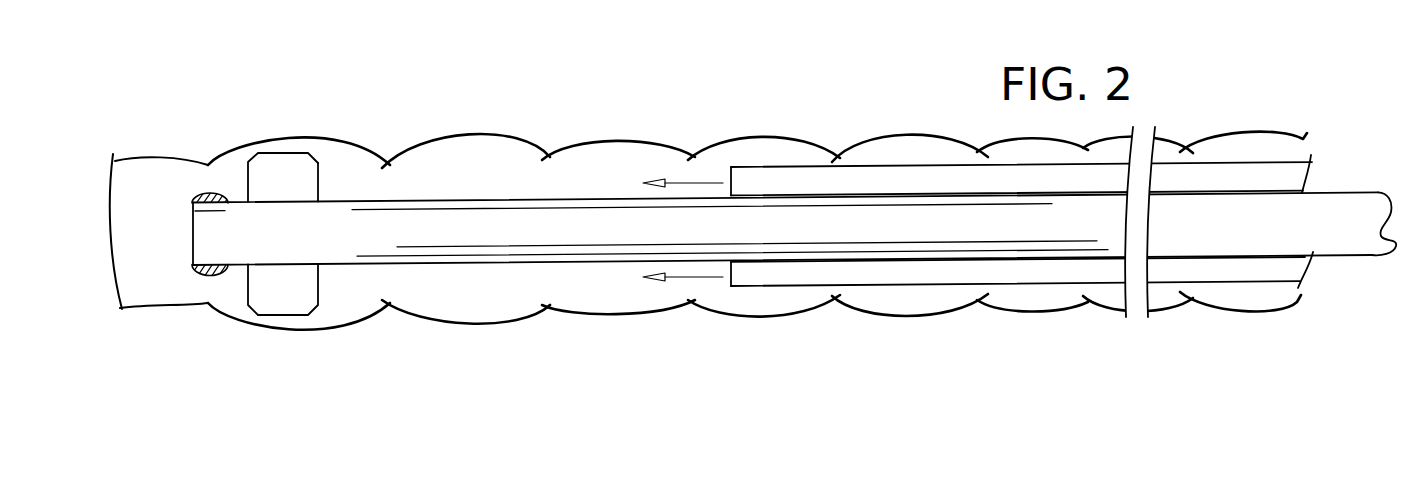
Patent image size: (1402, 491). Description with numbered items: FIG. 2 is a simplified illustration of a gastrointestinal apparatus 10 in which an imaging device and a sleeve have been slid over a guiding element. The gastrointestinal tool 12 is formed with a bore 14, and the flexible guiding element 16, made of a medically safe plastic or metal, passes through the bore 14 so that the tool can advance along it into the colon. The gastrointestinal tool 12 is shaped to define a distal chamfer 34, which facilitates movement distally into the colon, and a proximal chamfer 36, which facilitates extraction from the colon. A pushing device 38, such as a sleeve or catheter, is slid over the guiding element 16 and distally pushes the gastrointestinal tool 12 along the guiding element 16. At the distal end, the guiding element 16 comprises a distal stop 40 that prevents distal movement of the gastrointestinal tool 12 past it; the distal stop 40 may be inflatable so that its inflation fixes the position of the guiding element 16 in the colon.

The gastrointestinal apparatus 10 is at (753, 214).
The gastrointestinal tool 12 is at (284, 168).
The bore 14 is at (319, 200).
The guiding element 16 is at (568, 205).
The distal chamfer 34 is at (250, 158).
The proximal chamfer 36 is at (320, 313).
The pushing device 38 is at (863, 177).
The distal stop 40 is at (212, 276).